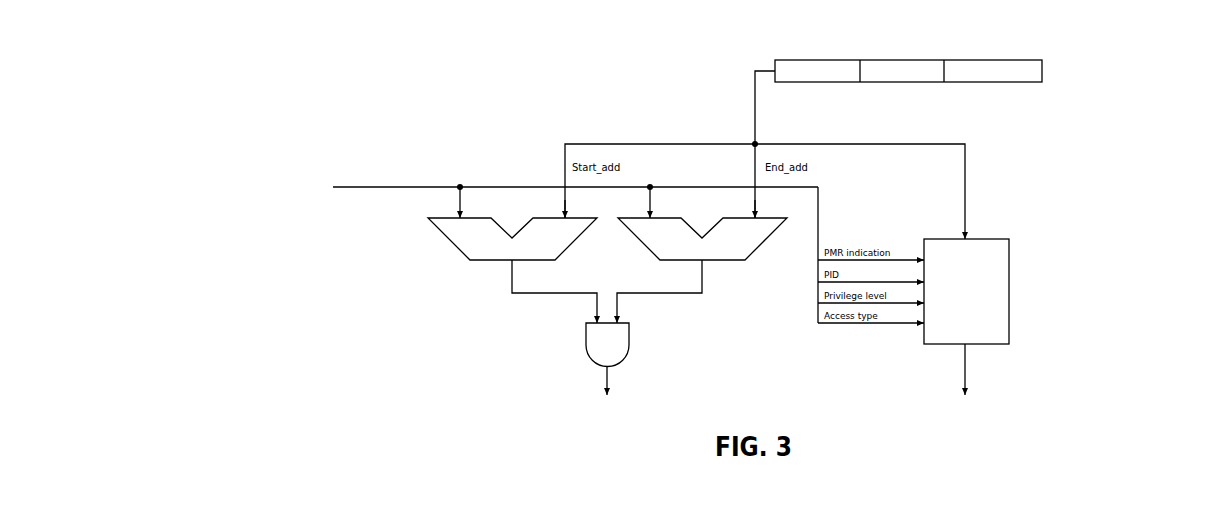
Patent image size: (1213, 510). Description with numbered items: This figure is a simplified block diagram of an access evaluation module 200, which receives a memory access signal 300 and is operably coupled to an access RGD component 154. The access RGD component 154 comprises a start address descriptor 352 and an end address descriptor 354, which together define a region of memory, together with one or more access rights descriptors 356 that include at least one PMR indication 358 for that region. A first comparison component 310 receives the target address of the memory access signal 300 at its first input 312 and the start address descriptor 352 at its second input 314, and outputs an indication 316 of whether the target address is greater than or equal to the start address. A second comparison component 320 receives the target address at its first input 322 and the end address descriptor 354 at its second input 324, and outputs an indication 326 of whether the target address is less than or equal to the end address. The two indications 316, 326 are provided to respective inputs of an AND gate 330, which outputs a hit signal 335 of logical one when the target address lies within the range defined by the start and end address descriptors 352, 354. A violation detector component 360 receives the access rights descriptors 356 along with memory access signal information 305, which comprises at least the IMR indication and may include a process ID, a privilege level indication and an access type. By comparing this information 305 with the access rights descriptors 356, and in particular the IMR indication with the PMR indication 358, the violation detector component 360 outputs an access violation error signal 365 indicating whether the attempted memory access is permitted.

The access evaluation module 200 is at (467, 78).
The memory access signal 300 is at (352, 164).
The access RGD component 154 is at (931, 73).
The start address descriptor 352 is at (820, 83).
The end address descriptor 354 is at (903, 83).
The access rights descriptors 356 is at (990, 83).
The PMR indication 358 is at (1114, 179).
The memory access signal information 305 is at (818, 222).
The first comparison component 310 is at (447, 241).
The first input of first comparison component 312 is at (456, 216).
The second input of first comparison component 314 is at (561, 216).
The indication output by first comparison component 316 is at (510, 273).
The second comparison component 320 is at (637, 241).
The first input of second comparison component 322 is at (646, 216).
The second input of second comparison component 324 is at (751, 216).
The indication output by second comparison component 326 is at (700, 273).
The AND gate 330 is at (584, 345).
The hit signal 335 is at (606, 378).
The violation detector component 360 is at (1010, 271).
The access violation (error) signal 365 is at (967, 379).